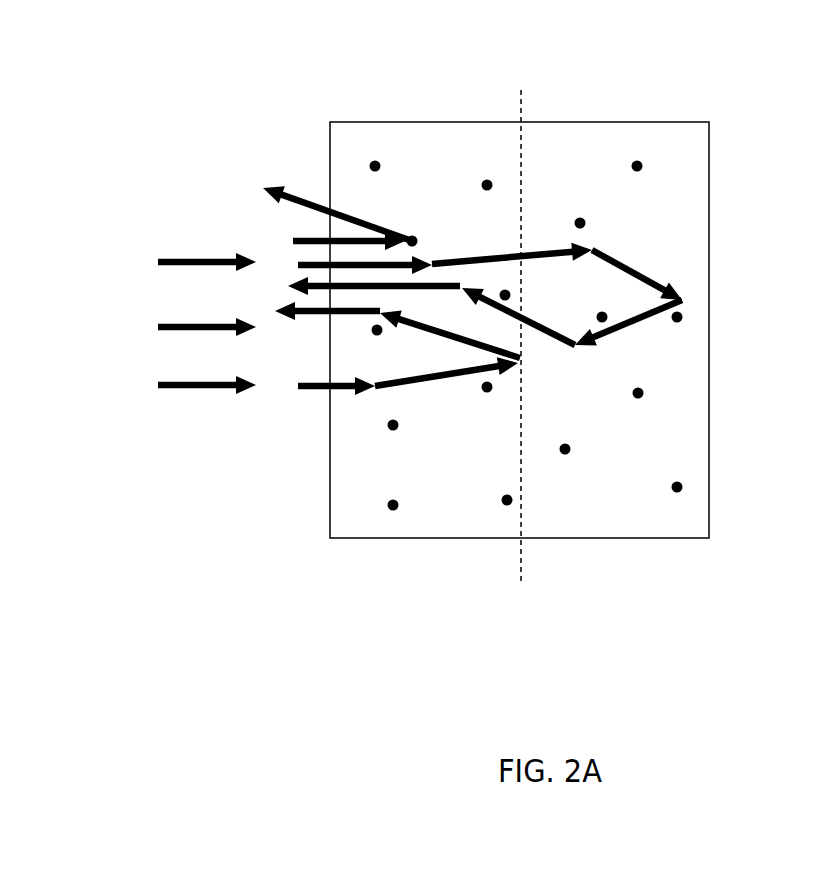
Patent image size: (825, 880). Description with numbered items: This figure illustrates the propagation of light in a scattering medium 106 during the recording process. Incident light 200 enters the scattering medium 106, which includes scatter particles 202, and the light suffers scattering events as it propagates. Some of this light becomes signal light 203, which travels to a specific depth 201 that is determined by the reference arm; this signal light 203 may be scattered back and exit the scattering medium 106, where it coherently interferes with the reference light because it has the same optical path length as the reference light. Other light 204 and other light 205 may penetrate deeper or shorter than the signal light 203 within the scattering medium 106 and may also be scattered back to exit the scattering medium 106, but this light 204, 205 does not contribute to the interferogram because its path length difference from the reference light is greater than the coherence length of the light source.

The scattering medium 106 is at (435, 150).
The incident light 200 is at (212, 392).
The specific depth 201 is at (522, 557).
The scatter particles 202 is at (623, 163).
The signal light 203 is at (322, 392).
The other light 204 is at (640, 320).
The other light 205 is at (296, 197).